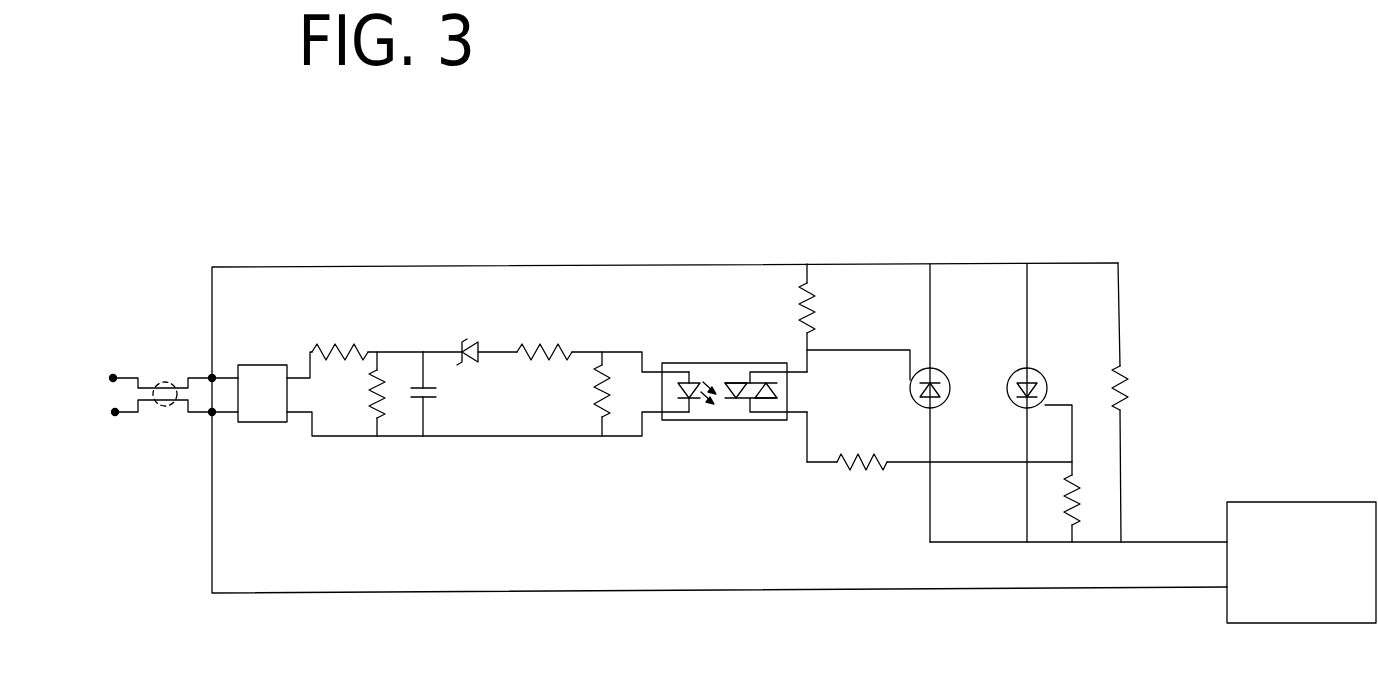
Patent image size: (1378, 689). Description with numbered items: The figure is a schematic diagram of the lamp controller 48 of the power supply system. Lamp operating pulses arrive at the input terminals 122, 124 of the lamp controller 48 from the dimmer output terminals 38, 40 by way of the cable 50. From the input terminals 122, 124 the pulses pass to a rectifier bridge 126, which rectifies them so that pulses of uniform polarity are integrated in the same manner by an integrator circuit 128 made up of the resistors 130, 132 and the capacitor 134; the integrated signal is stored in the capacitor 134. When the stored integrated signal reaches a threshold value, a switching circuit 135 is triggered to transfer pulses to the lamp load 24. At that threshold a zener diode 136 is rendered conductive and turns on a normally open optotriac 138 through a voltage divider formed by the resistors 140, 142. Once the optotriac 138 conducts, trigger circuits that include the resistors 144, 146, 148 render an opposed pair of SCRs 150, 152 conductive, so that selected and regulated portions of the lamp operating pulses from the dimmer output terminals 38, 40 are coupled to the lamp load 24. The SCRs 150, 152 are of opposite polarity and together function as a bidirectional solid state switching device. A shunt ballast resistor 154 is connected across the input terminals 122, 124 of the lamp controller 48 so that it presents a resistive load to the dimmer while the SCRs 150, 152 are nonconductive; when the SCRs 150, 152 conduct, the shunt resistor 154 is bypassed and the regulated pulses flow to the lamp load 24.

The lamp load 24 is at (1356, 502).
The dimmer output terminal 38 is at (111, 376).
The dimmer output terminal 40 is at (113, 413).
The lamp controller 48 is at (1060, 195).
The cable 50 is at (160, 383).
The input terminal 122 is at (213, 377).
The input terminal 124 is at (212, 413).
The rectifier bridge 126 is at (268, 422).
The integrator circuit 128 is at (388, 288).
The resistor 130 is at (363, 344).
The resistor 132 is at (378, 405).
The capacitor 134 is at (432, 396).
The switching circuit 135 is at (702, 530).
The zener diode 136 is at (463, 340).
The optotriac 138 is at (737, 363).
The resistor 140 is at (558, 344).
The resistor 142 is at (598, 402).
The resistor 144 is at (812, 314).
The resistor 146 is at (853, 469).
The resistor 148 is at (1068, 512).
The SCR 150 is at (946, 375).
The SCR 152 is at (1046, 373).
The shunt ballast resistor 154 is at (1127, 372).